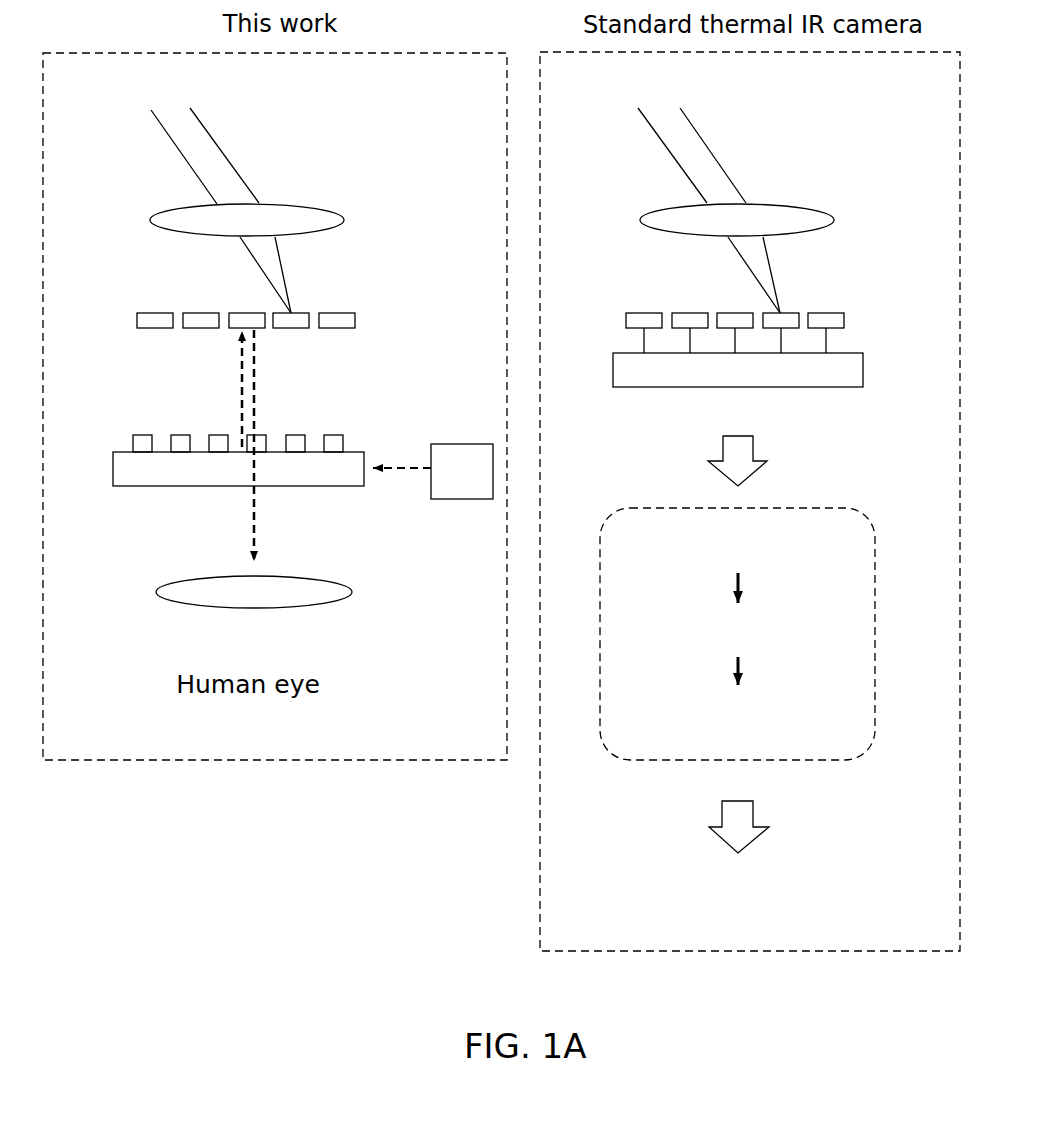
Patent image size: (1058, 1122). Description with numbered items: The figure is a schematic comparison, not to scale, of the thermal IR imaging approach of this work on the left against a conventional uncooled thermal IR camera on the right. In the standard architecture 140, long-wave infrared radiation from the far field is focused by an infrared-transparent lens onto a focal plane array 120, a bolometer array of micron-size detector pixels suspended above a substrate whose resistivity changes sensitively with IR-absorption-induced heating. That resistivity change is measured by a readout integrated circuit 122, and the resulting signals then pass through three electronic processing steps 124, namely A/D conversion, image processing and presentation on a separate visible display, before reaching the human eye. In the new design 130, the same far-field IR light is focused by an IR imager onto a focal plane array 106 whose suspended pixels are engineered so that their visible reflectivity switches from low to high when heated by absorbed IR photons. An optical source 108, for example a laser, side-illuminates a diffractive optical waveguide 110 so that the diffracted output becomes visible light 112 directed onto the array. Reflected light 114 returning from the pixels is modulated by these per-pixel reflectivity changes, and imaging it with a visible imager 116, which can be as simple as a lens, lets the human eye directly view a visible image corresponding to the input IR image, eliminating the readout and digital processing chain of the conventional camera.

The focal plane array 106 is at (372, 319).
The optical source 108 is at (446, 482).
The diffractive optical waveguide 110 is at (168, 500).
The visible light 112 is at (240, 370).
The reflected light 114 is at (257, 360).
The visible imager 116 is at (335, 592).
The focal plane array 120 is at (855, 319).
The readout integrated circuit 122 is at (722, 381).
The electronic processing steps 124 is at (838, 508).
The new design architecture 130 is at (217, 782).
The standard thermal IR camera architecture 140 is at (801, 966).